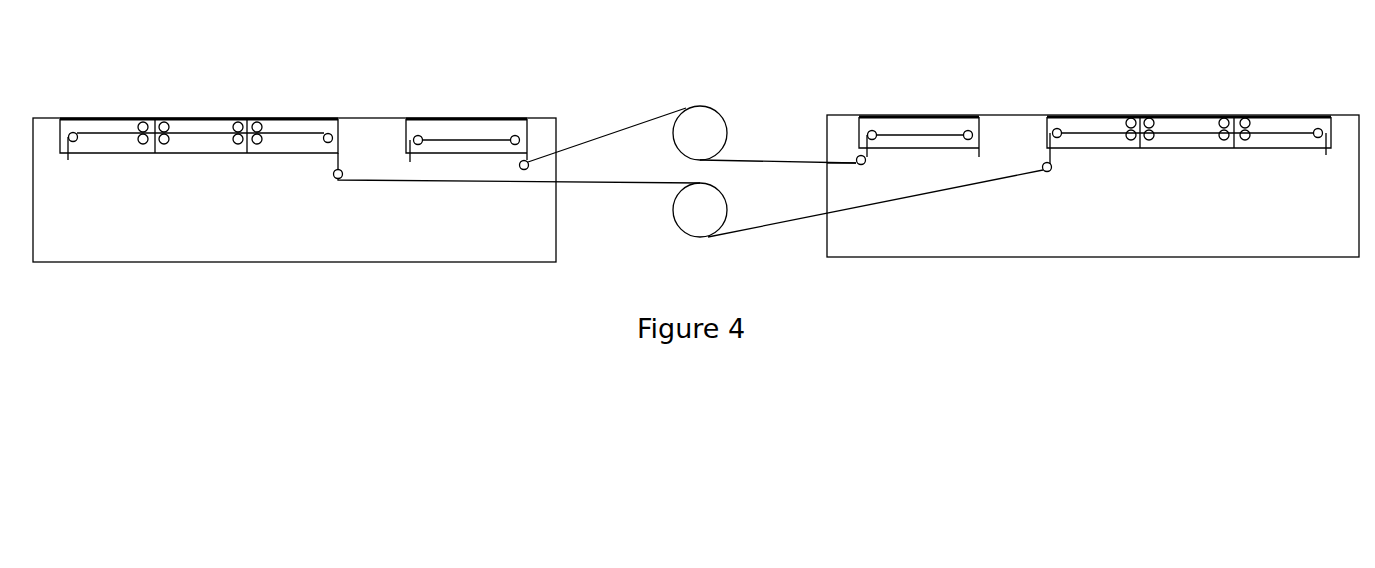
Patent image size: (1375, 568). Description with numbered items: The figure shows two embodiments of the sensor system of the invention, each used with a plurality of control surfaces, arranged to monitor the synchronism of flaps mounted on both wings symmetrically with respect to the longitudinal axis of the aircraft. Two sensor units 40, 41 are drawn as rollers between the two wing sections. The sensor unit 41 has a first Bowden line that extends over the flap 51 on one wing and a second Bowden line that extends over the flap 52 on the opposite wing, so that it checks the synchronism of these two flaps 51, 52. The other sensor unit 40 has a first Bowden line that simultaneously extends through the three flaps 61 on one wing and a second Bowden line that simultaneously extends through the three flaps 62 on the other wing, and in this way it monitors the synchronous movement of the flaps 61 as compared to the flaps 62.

The sensor unit 40 is at (688, 218).
The sensor unit 41 is at (702, 125).
The flap 51 is at (477, 127).
The flap 52 is at (928, 125).
The flaps 61 is at (295, 127).
The flaps 62 is at (1273, 122).